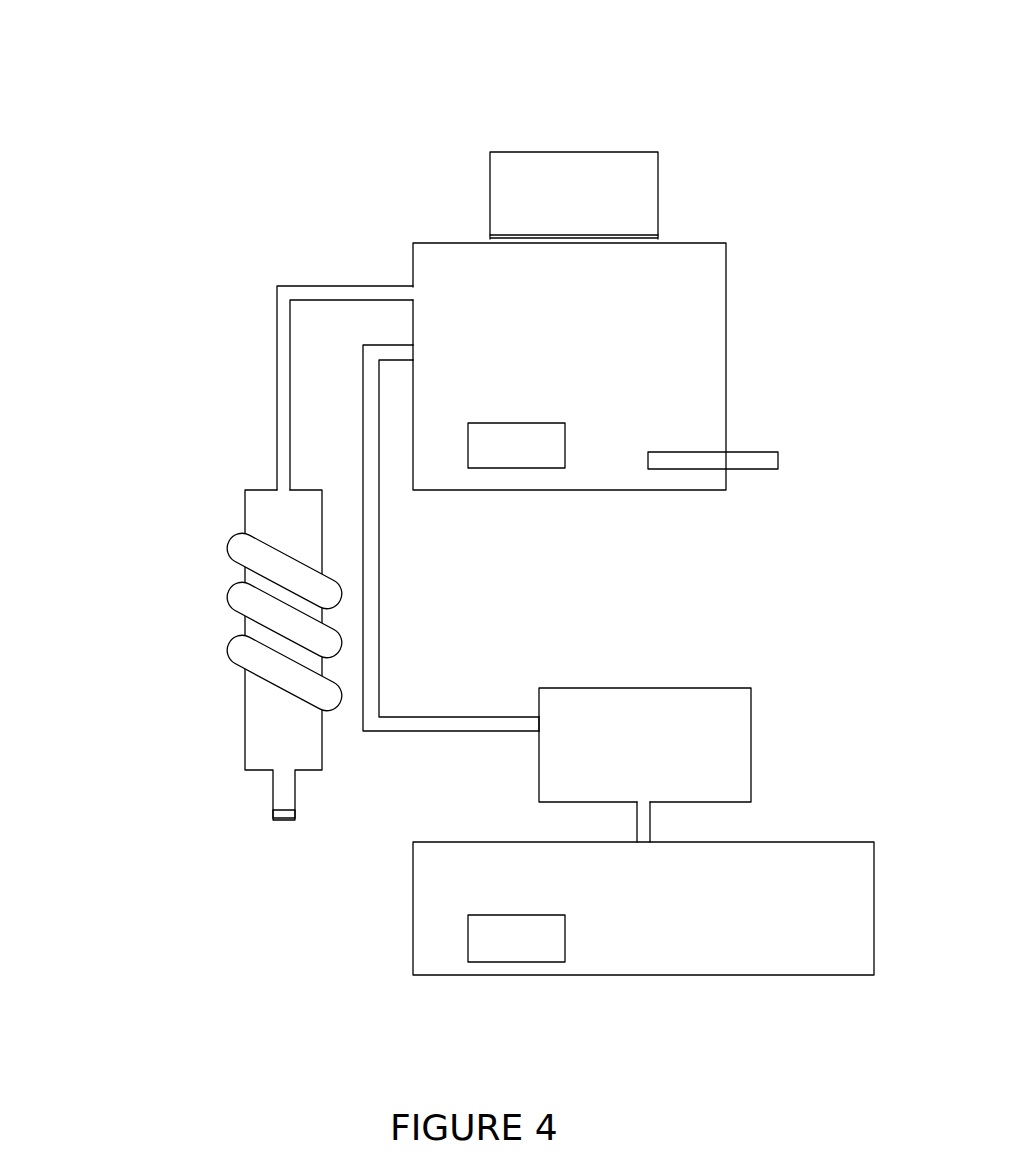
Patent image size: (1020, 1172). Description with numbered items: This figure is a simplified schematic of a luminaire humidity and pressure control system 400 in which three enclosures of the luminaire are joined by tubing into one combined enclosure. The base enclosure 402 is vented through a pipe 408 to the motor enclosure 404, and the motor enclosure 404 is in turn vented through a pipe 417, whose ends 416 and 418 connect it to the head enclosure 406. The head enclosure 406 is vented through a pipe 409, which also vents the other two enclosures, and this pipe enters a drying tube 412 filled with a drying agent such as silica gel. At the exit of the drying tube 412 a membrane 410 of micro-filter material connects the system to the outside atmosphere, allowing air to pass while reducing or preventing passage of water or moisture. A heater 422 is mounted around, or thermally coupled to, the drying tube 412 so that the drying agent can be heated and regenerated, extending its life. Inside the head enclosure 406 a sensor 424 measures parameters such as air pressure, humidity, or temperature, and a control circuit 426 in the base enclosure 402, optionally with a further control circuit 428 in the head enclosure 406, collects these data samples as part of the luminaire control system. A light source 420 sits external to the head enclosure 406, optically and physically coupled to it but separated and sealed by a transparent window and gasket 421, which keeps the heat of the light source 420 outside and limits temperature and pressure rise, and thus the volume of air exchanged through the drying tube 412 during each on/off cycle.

The luminaire humidity and pressure control system 400 is at (338, 120).
The base enclosure 402 is at (430, 947).
The motor enclosure 404 is at (727, 744).
The head enclosure 406 is at (693, 394).
The pipe 408 is at (650, 820).
The pipe 409 is at (283, 302).
The membrane 410 is at (273, 818).
The drying tube 412 is at (258, 500).
The end of pipe 416 is at (525, 722).
The pipe 417 is at (380, 560).
The end of pipe 418 is at (402, 352).
The light source 420 is at (592, 172).
The transparent window and gasket 421 is at (655, 237).
The heater 422 is at (230, 603).
The sensor 424 is at (755, 460).
The control circuit 426 is at (517, 948).
The control circuit 428 is at (544, 448).